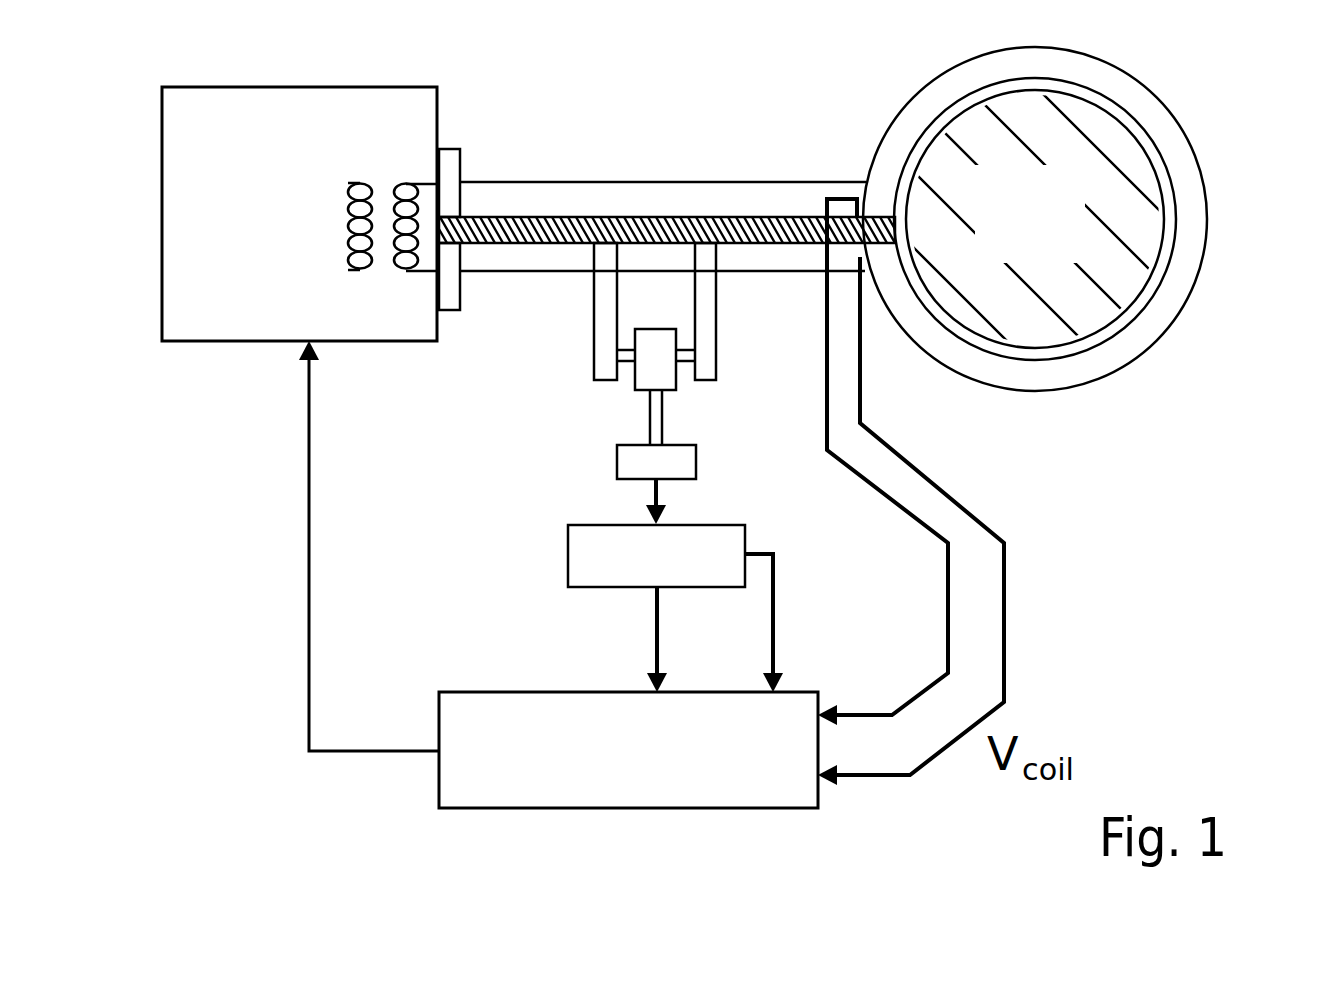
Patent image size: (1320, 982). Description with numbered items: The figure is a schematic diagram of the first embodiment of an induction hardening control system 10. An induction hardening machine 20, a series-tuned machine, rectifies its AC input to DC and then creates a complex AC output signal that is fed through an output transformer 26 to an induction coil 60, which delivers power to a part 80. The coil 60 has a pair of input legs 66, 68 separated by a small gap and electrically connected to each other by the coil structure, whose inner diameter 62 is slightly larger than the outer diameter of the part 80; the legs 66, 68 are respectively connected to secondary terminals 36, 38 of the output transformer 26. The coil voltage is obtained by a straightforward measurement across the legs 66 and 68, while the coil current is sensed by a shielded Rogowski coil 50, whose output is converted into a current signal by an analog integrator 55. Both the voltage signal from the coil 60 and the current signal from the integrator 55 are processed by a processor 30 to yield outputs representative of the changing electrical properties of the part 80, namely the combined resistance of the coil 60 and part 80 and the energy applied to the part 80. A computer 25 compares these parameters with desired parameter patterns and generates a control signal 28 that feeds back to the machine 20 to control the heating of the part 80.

The induction hardening control system 10 is at (1090, 586).
The induction hardening machine 20 is at (299, 214).
The computer 25 is at (628, 750).
The output transformer 26 is at (350, 250).
The control signal 28 is at (300, 568).
The processor 30 is at (567, 570).
The secondary terminal 36 is at (448, 170).
The secondary terminal 38 is at (452, 292).
The Rogowski coil 50 is at (663, 372).
The analog integrator 55 is at (704, 447).
The induction coil 60 is at (1103, 356).
The inner diameter 62 is at (1155, 145).
The input leg 66 is at (837, 192).
The input leg 68 is at (865, 307).
The part 80 is at (1050, 292).